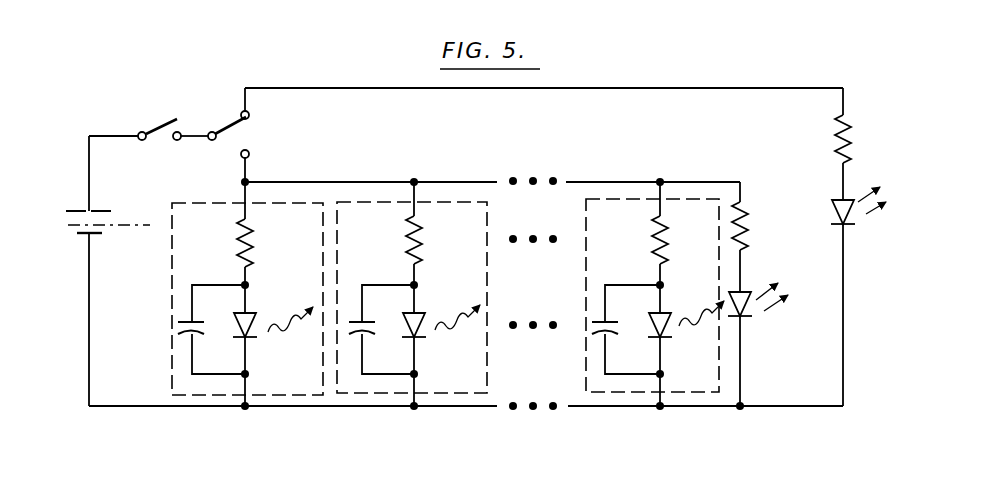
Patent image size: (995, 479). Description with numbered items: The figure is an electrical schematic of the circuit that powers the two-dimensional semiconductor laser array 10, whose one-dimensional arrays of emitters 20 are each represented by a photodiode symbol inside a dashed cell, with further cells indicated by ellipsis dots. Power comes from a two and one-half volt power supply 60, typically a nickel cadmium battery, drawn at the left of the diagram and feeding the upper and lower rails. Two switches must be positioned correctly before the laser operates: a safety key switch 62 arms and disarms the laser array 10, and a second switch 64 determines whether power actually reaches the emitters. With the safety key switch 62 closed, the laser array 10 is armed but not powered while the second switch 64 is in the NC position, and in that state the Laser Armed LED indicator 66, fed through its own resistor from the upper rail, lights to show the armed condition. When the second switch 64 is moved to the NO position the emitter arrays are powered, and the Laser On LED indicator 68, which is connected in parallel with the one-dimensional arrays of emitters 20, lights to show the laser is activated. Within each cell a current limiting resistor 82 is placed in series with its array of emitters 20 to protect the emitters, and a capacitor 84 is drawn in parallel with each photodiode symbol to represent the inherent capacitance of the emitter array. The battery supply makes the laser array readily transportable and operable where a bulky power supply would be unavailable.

The semiconductor laser array 10 is at (352, 396).
The one-dimensional array of emitters 20 is at (272, 336).
The power supply 60 is at (60, 212).
The safety key switch 62 is at (154, 127).
The second switch 64 is at (236, 134).
The Laser Armed LED indicator 66 is at (870, 220).
The Laser On LED indicator 68 is at (764, 312).
The current limiting resistor 82 is at (256, 240).
The capacitor 84 is at (177, 330).